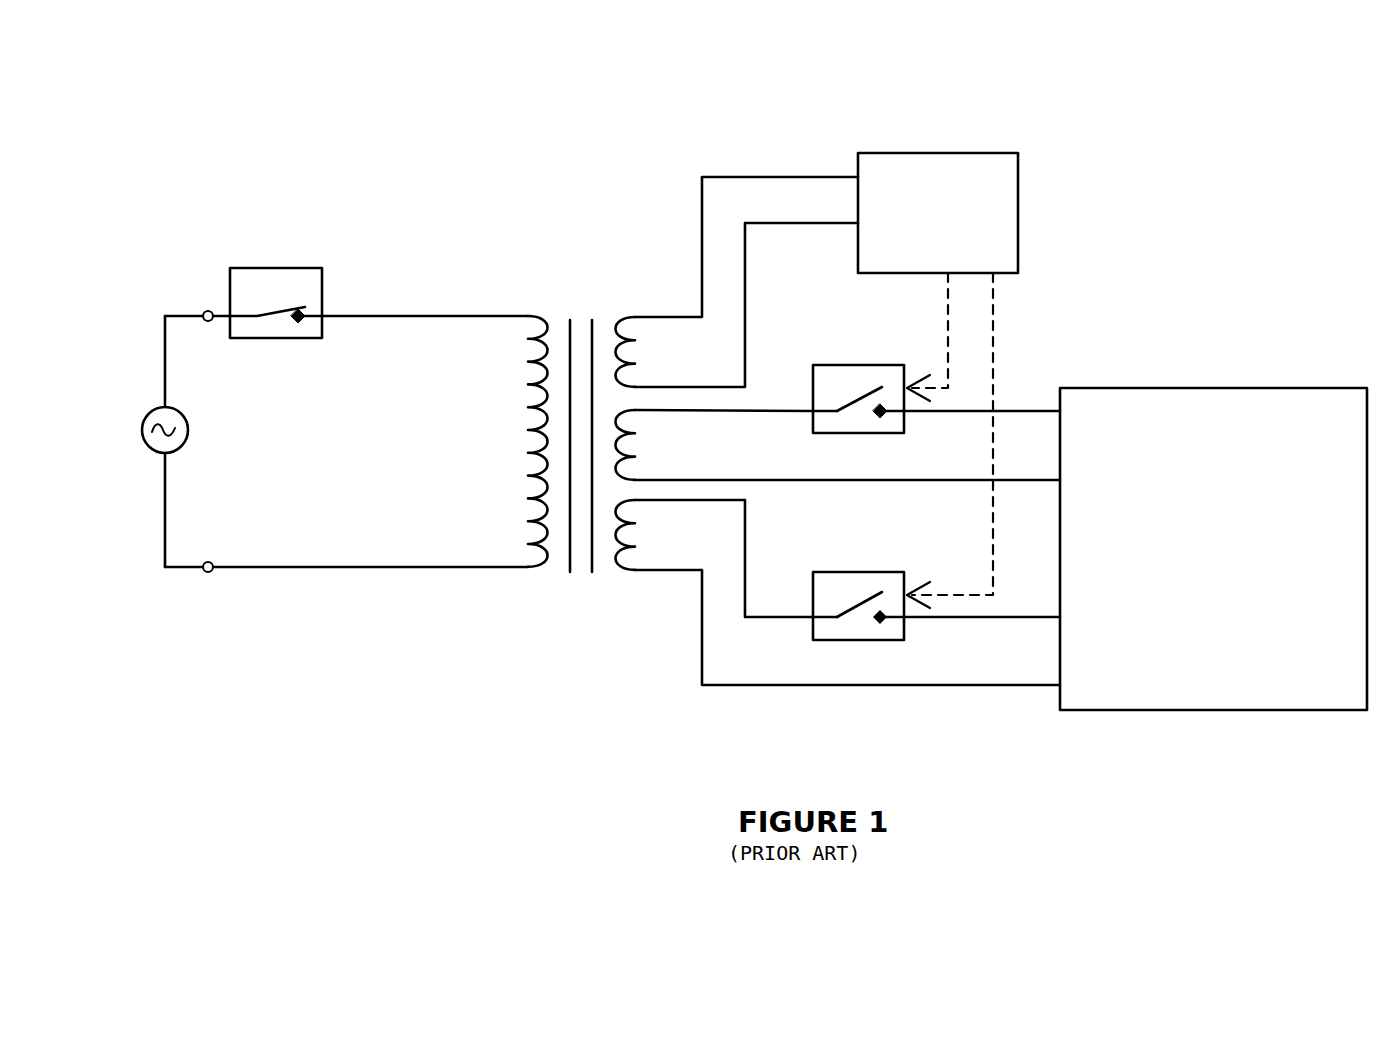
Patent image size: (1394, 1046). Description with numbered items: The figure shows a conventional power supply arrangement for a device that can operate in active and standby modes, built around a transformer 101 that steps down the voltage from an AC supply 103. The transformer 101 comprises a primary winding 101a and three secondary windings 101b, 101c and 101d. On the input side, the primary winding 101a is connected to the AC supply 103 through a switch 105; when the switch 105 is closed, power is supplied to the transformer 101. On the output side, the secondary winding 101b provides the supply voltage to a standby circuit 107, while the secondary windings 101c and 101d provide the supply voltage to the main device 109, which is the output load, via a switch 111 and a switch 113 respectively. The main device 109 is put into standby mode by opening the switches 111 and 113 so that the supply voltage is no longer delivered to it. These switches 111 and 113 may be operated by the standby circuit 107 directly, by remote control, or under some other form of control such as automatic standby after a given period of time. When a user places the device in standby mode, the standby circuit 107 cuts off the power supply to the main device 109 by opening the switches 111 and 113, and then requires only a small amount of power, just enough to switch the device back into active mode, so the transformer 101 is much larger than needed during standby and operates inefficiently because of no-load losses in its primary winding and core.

The transformer 101 is at (761, 431).
The primary winding 101a is at (505, 441).
The secondary winding 101b is at (737, 282).
The secondary winding 101c is at (838, 445).
The secondary winding 101d is at (838, 592).
The AC supply 103 is at (145, 393).
The switch 105 is at (330, 268).
The standby circuit 107 is at (1025, 168).
The main device 109 is at (1245, 378).
The switch 111 is at (850, 348).
The switch 113 is at (837, 555).